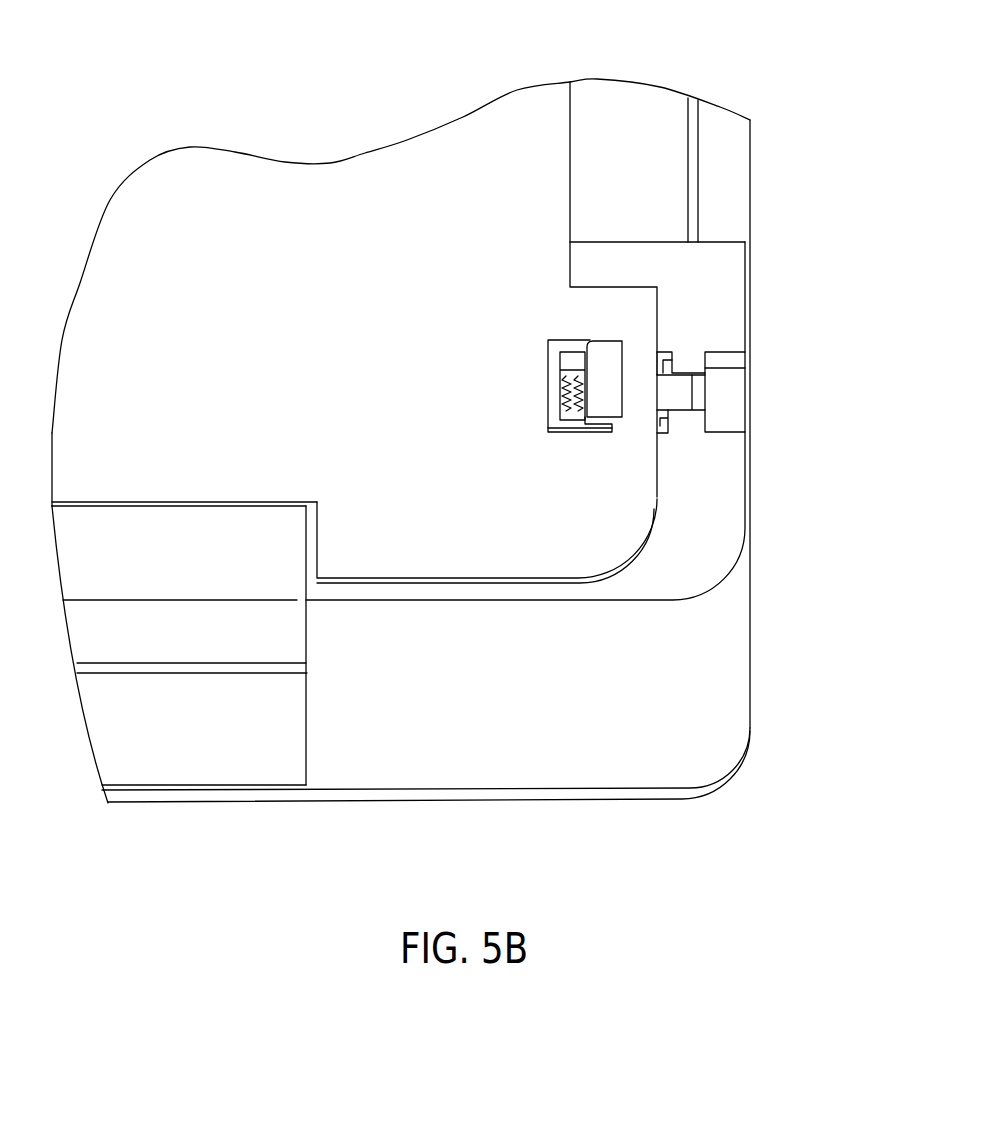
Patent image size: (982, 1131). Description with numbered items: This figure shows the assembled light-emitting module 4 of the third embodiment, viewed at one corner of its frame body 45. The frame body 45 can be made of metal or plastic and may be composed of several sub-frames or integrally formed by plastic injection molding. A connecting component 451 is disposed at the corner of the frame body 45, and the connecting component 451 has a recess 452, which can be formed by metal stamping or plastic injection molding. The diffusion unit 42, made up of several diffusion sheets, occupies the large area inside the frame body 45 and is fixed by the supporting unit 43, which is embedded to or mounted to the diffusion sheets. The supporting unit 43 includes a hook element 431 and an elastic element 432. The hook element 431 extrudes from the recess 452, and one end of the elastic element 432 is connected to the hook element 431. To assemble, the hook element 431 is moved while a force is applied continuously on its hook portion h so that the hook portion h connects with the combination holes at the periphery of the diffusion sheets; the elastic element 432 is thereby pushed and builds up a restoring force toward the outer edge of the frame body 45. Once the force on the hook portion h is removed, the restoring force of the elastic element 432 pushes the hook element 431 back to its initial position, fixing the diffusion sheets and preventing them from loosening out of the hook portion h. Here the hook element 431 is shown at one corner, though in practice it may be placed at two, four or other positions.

The light-emitting module 4 is at (46, 31).
The diffusion unit 42 is at (410, 205).
The supporting unit 43 is at (582, 445).
The hook element 431 is at (613, 395).
The elastic element 432 is at (573, 412).
The frame body 45 is at (722, 192).
The connecting component 451 is at (717, 656).
The recess 452 is at (725, 402).
The hook portion h is at (606, 362).